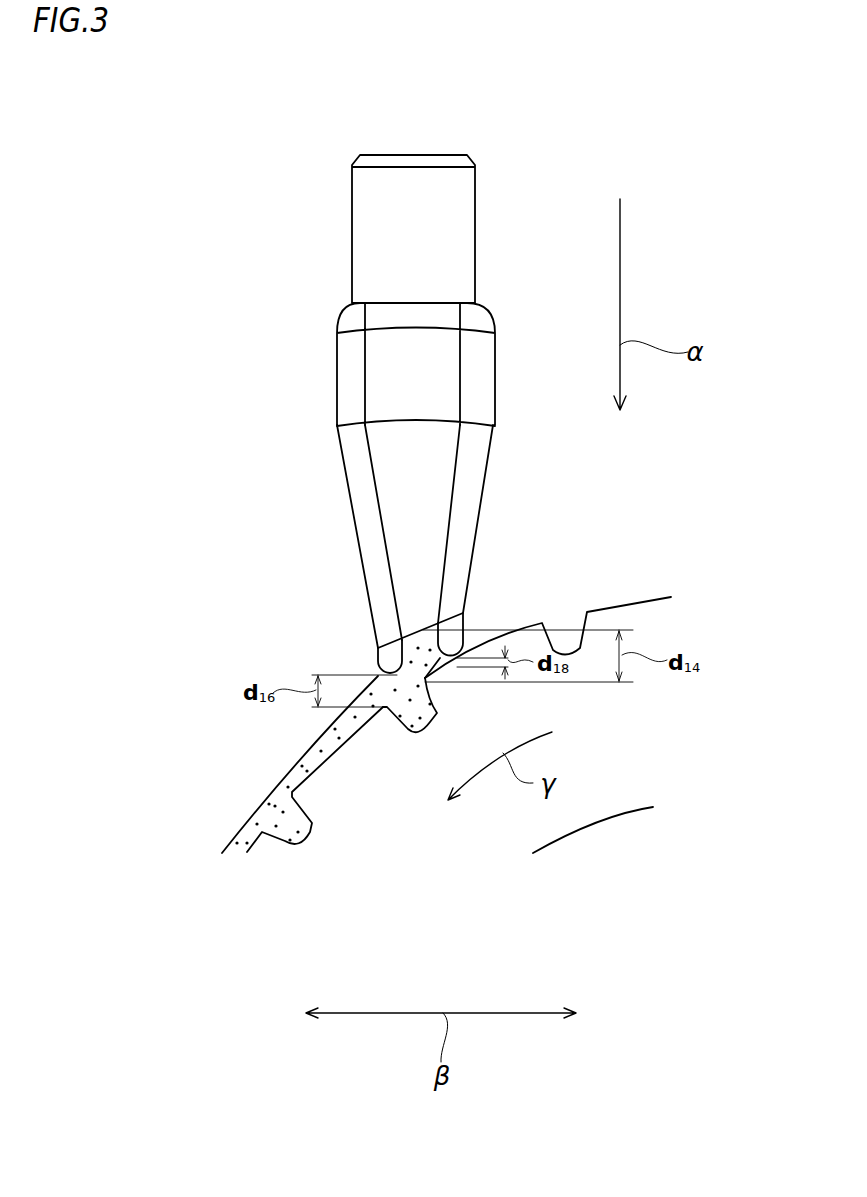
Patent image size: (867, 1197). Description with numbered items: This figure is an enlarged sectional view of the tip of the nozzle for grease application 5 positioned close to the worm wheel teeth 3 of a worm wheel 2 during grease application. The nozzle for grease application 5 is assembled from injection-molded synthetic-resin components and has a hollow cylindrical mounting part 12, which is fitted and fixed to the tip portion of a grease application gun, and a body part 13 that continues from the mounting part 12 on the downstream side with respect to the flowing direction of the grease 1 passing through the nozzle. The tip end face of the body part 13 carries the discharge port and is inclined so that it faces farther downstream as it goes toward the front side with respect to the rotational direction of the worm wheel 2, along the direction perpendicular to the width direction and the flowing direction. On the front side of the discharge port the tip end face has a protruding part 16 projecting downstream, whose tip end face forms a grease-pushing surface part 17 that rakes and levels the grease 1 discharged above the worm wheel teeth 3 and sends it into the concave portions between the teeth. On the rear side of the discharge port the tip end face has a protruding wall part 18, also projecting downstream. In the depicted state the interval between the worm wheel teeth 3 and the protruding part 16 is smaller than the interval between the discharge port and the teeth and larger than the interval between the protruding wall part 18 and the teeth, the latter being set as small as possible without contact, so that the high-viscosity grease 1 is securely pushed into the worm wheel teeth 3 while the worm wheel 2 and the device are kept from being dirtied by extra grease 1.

The grease 1 is at (273, 807).
The worm wheel 2 is at (603, 760).
The worm wheel teeth 3 is at (638, 598).
The nozzle for grease application 5 is at (311, 381).
The mounting part 12 is at (448, 225).
The body part 13 is at (432, 403).
The protruding part 16 is at (392, 652).
The grease-pushing surface part 17 is at (417, 735).
The protruding wall part 18 is at (450, 640).